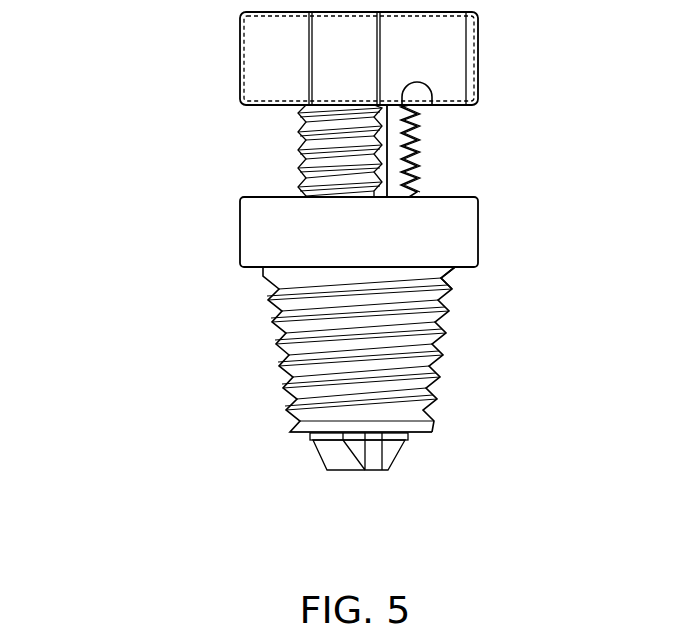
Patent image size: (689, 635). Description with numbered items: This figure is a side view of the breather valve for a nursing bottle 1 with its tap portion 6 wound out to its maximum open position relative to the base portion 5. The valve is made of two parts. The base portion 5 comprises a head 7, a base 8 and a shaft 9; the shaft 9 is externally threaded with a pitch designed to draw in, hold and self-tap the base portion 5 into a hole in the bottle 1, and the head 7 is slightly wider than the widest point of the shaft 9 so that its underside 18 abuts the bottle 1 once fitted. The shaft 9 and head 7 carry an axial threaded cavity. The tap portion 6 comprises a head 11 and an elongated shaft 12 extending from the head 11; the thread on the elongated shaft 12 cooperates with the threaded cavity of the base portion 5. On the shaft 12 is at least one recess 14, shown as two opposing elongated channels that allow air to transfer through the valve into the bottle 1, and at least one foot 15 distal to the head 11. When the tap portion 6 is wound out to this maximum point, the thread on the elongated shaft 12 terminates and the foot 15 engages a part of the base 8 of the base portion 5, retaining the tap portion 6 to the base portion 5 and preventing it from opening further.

The nursing bottle 1 is at (315, 277).
The base portion 5 is at (388, 369).
The tap portion 6 is at (358, 104).
The head 7 is at (240, 233).
The base 8 is at (302, 454).
The shaft 9 is at (256, 319).
The head 11 is at (240, 60).
The elongated shaft 12 is at (288, 147).
The recess 14 is at (417, 143).
The foot 15 is at (385, 472).
The underside 18 is at (468, 275).